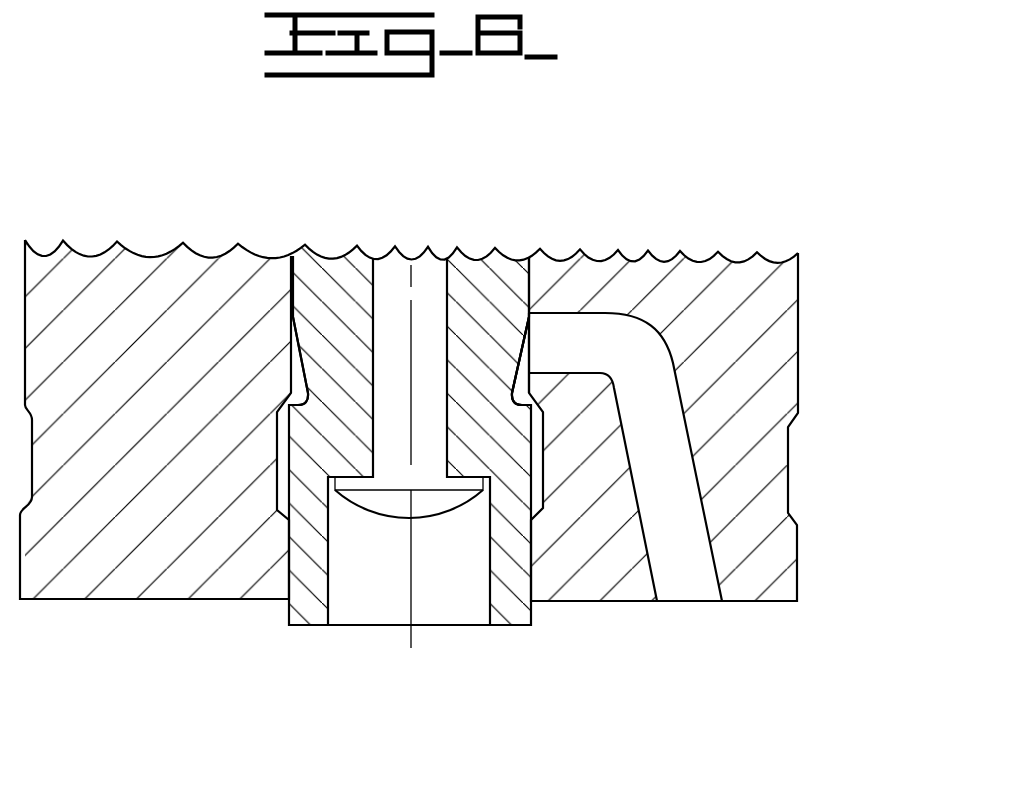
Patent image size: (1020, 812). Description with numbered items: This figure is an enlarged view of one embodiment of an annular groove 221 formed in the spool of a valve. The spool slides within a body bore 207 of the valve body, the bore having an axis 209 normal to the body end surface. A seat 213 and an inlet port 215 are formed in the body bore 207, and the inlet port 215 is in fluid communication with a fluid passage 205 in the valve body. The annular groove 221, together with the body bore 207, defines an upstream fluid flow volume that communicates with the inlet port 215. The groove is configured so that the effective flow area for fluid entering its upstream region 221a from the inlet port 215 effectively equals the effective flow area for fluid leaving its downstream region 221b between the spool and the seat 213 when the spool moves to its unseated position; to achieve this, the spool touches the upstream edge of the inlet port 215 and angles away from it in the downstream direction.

The fluid passage 205 is at (703, 587).
The body bore 207 is at (297, 283).
The axis 209 is at (427, 237).
The seat 213 is at (535, 410).
The inlet port 215 is at (524, 333).
The annular groove 221 is at (508, 387).
The upstream region 221a is at (520, 367).
The downstream region 221b is at (520, 397).